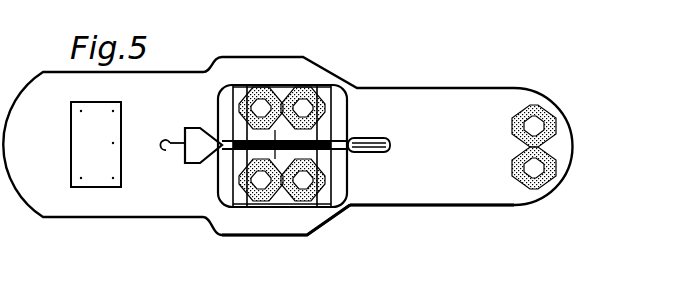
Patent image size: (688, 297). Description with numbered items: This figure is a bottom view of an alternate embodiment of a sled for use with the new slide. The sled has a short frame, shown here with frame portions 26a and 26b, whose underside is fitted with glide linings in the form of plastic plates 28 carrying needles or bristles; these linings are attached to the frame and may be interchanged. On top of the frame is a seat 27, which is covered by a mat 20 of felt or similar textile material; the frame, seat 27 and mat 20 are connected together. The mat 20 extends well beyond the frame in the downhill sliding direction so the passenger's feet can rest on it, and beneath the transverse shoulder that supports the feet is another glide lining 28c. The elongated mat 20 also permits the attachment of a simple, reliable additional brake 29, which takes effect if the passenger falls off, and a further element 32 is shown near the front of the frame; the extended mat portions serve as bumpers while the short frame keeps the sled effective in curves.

The mat 20 is at (427, 183).
The additional brake 29 is at (91, 174).
The hook switch lever 32 is at (165, 151).
The seat 27 is at (338, 160).
The motor housing 26b is at (237, 193).
The motor frame 26a is at (263, 178).
The plastic plates 28 is at (317, 175).
The glide lining 28c is at (527, 190).